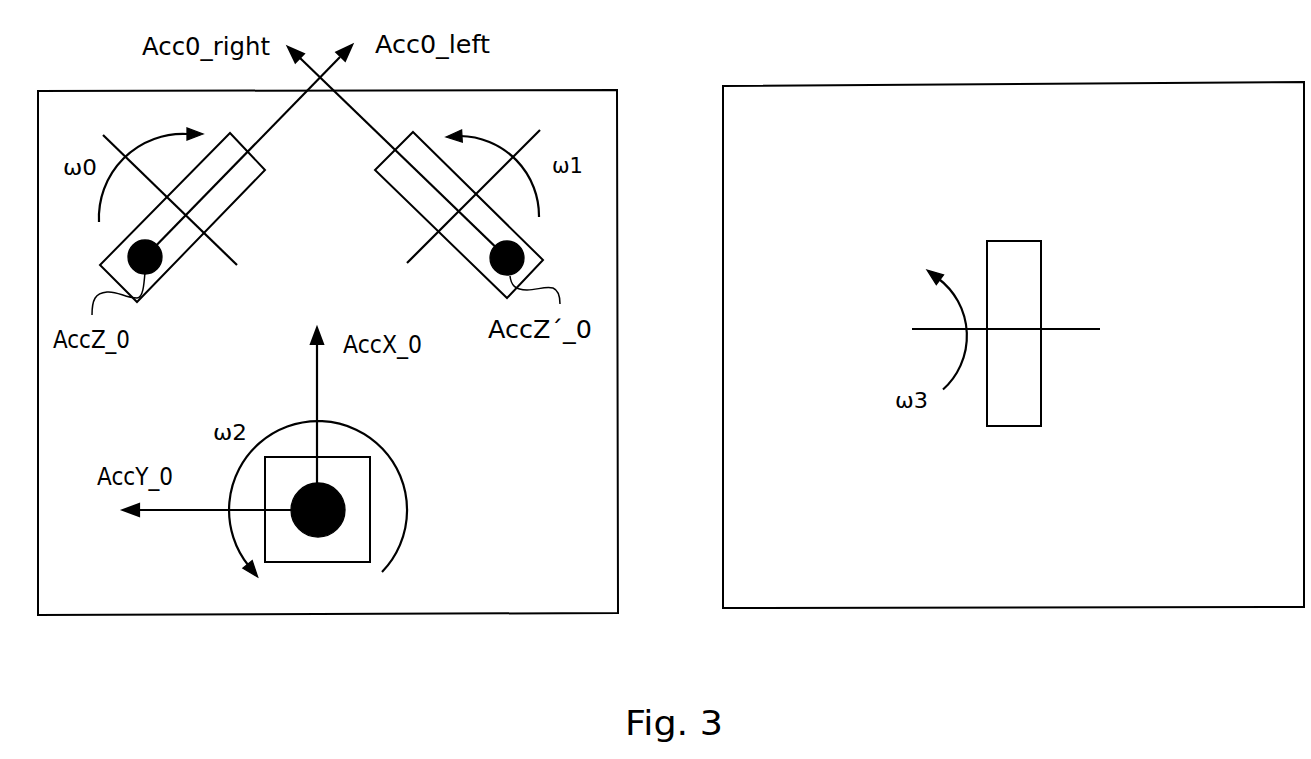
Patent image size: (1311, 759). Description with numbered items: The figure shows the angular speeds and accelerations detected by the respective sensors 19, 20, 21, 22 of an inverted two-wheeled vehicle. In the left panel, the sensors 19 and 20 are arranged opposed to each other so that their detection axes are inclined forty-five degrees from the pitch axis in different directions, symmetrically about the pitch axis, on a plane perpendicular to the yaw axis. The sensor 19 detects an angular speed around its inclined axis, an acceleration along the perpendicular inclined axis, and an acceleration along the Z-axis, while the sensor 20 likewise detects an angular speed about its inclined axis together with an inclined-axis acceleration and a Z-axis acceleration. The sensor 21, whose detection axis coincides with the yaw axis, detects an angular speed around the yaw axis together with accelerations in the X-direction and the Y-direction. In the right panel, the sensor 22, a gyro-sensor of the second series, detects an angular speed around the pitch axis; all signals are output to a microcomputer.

The sensor 19 is at (212, 205).
The sensor 20 is at (532, 246).
The sensor 21 is at (371, 457).
The sensor 22 is at (1015, 241).